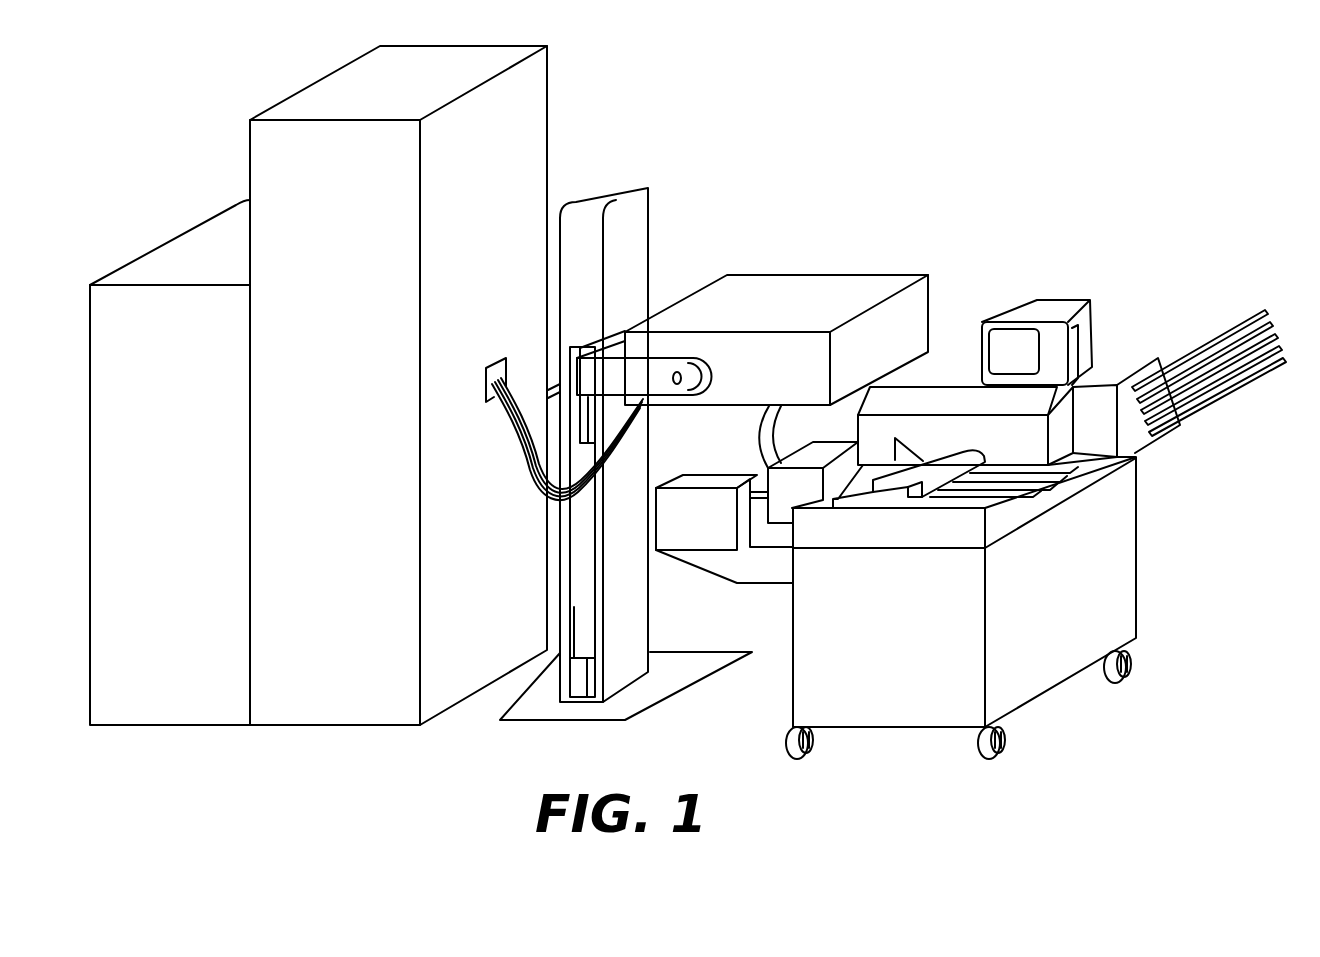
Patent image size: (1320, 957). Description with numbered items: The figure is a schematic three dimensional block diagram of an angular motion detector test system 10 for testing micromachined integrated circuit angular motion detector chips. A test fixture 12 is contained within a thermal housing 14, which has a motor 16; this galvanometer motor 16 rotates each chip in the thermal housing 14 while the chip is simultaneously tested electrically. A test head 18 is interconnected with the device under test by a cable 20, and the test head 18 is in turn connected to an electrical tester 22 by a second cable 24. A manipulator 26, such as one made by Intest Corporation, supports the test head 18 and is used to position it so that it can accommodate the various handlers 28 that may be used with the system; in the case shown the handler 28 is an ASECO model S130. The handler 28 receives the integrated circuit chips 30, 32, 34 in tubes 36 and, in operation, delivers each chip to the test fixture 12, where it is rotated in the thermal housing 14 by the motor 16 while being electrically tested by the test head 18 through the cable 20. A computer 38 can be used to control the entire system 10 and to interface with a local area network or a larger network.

The angular motion detector test system 10 is at (834, 172).
The test fixture 12 is at (686, 568).
The thermal housing 14 is at (802, 501).
The motor 16 is at (710, 478).
The test head 18 is at (775, 371).
The cable 20 is at (758, 428).
The electrical tester 22 is at (326, 96).
The cable 24 is at (517, 452).
The manipulator 26 is at (607, 193).
The handler 28 is at (1103, 575).
The integrated circuit chip 30 is at (1188, 338).
The integrated circuit chip 32 is at (1207, 331).
The integrated circuit chip 34 is at (1245, 309).
The tubes 36 is at (1268, 301).
The computer 38 is at (163, 263).